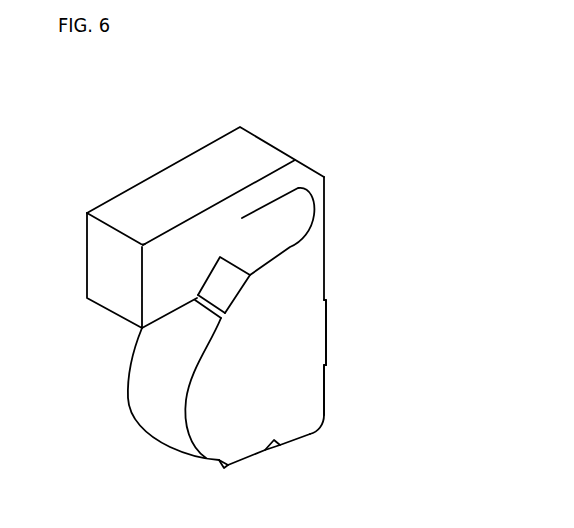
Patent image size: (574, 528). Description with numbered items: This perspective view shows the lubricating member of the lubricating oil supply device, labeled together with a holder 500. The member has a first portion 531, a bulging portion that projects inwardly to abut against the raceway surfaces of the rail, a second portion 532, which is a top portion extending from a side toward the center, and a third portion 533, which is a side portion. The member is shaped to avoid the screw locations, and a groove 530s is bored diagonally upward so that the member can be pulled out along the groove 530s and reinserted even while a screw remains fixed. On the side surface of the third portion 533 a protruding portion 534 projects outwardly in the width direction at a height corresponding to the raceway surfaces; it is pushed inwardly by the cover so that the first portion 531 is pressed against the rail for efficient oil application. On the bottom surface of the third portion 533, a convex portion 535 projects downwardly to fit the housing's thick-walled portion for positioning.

The holder 500 is at (297, 110).
The groove 530s is at (220, 280).
The first portion 531 is at (207, 435).
The second portion 532 is at (167, 260).
The third portion 533 is at (308, 390).
The protruding portion 534 is at (328, 335).
The convex portion 535 is at (302, 430).